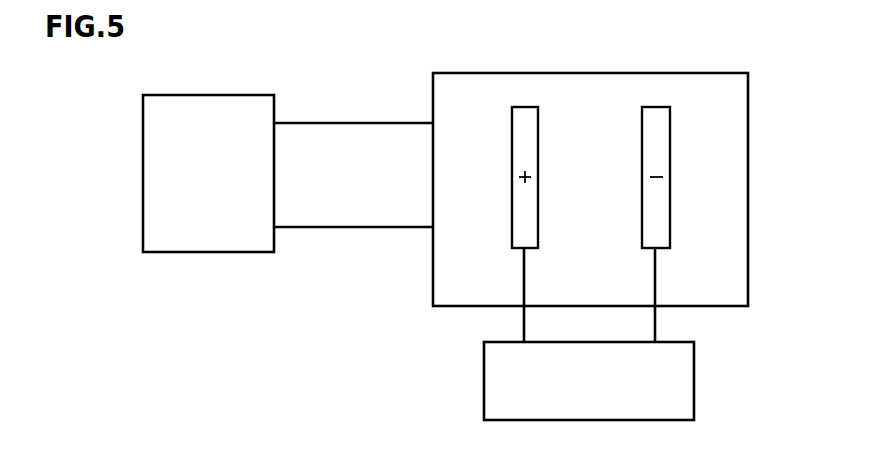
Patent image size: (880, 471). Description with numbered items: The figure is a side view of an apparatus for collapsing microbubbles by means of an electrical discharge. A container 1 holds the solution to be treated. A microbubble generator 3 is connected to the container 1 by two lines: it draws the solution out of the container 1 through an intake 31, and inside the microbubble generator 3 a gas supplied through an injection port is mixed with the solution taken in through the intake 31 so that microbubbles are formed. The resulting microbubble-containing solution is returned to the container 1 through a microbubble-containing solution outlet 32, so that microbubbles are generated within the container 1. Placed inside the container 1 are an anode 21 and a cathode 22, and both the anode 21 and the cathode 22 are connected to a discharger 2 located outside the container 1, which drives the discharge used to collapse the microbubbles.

The container 1 is at (590, 177).
The discharger 2 is at (566, 381).
The microbubble generator 3 is at (208, 156).
The anode 21 is at (511, 214).
The cathode 22 is at (667, 214).
The intake 31 is at (353, 109).
The microbubble-containing solution outlet 32 is at (353, 245).